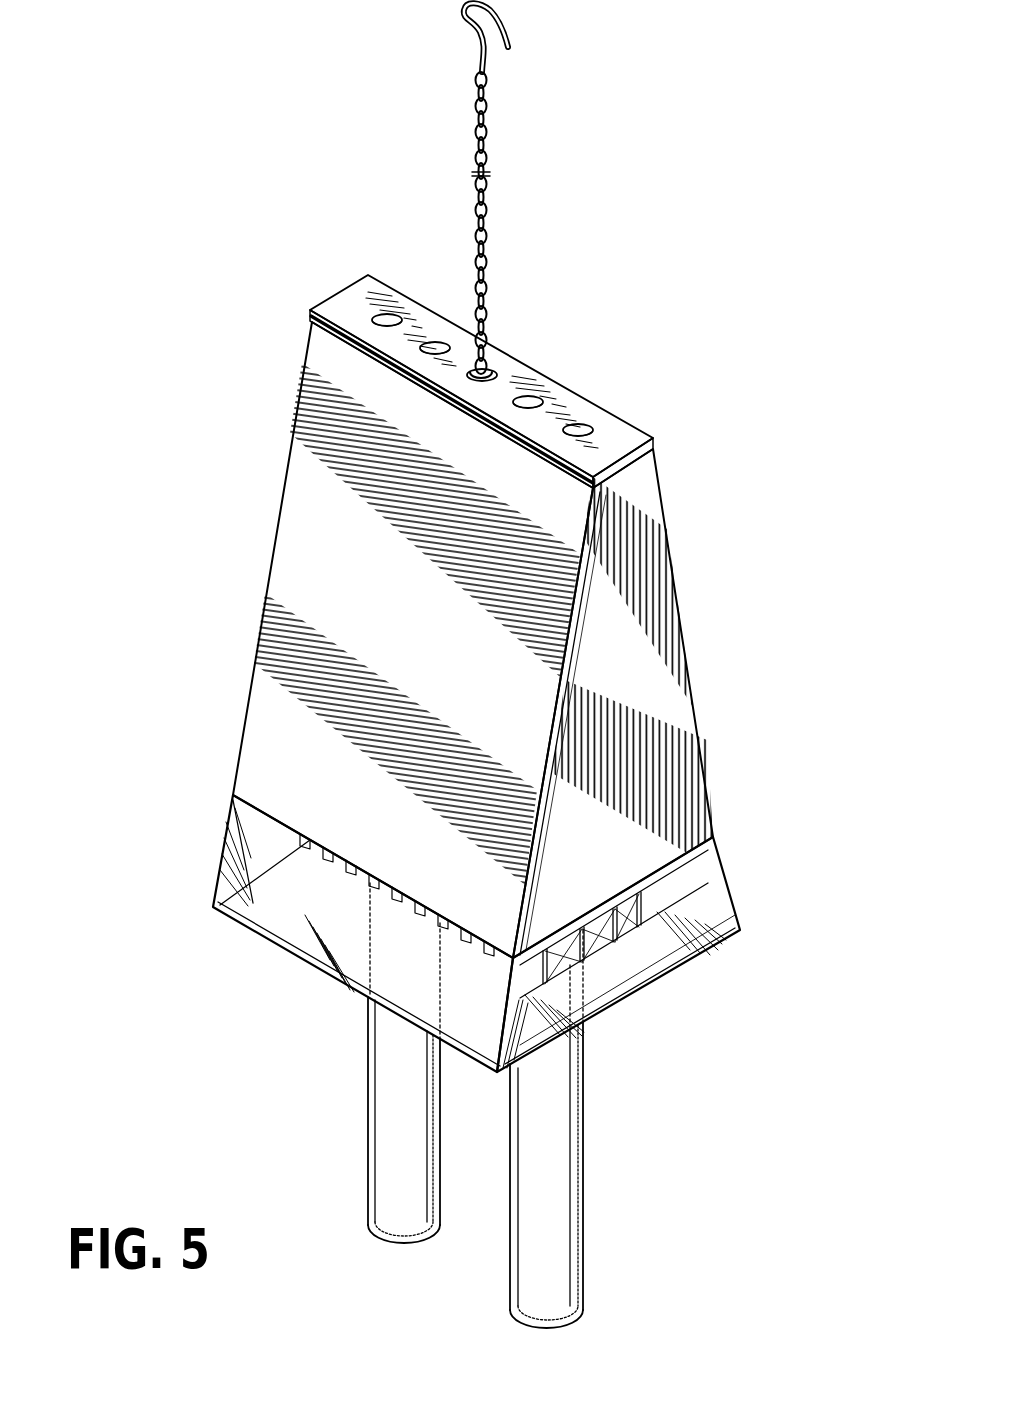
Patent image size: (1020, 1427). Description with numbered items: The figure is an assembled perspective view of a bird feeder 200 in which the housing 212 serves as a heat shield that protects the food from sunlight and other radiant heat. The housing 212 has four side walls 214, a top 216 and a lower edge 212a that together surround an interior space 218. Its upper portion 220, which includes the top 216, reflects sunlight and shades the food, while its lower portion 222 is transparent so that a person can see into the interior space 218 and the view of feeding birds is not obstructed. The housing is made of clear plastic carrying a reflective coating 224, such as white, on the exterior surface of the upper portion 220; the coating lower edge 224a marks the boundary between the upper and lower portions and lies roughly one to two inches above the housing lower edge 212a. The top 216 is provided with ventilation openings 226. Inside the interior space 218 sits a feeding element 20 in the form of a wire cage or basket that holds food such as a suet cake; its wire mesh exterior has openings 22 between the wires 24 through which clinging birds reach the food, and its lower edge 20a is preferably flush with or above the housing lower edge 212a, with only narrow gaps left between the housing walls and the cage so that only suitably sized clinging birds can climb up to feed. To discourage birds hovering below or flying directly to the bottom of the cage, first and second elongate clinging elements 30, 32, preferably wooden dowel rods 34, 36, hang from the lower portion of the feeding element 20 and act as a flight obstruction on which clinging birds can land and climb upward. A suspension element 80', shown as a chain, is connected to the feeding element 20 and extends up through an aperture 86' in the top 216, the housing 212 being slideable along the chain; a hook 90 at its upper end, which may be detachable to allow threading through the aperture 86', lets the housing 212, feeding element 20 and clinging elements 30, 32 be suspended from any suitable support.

The bird feeder 200 is at (503, 662).
The housing 212 is at (499, 640).
The housing lower edge 212a is at (243, 930).
The side walls 214 is at (312, 550).
The top 216 is at (535, 334).
The interior space 218 is at (313, 985).
The upper portion 220 is at (730, 823).
The lower portion 222 is at (497, 969).
The reflective coating 224 is at (552, 515).
The coating lower edge 224a is at (684, 975).
The ventilation openings 226 is at (434, 343).
The suspension element 80' is at (533, 216).
The aperture 86' is at (532, 346).
The hook 90 is at (512, 40).
The feeding element 20 is at (657, 913).
The lower edge of the feeding element 20a is at (597, 970).
The openings 22 is at (623, 907).
The wires 24 is at (478, 968).
The first elongate clinging element 30 is at (355, 1063).
The second elongate clinging element 32 is at (594, 1129).
The wooden dowel rod 34 is at (385, 1150).
The wooden dowel rod 36 is at (555, 1182).